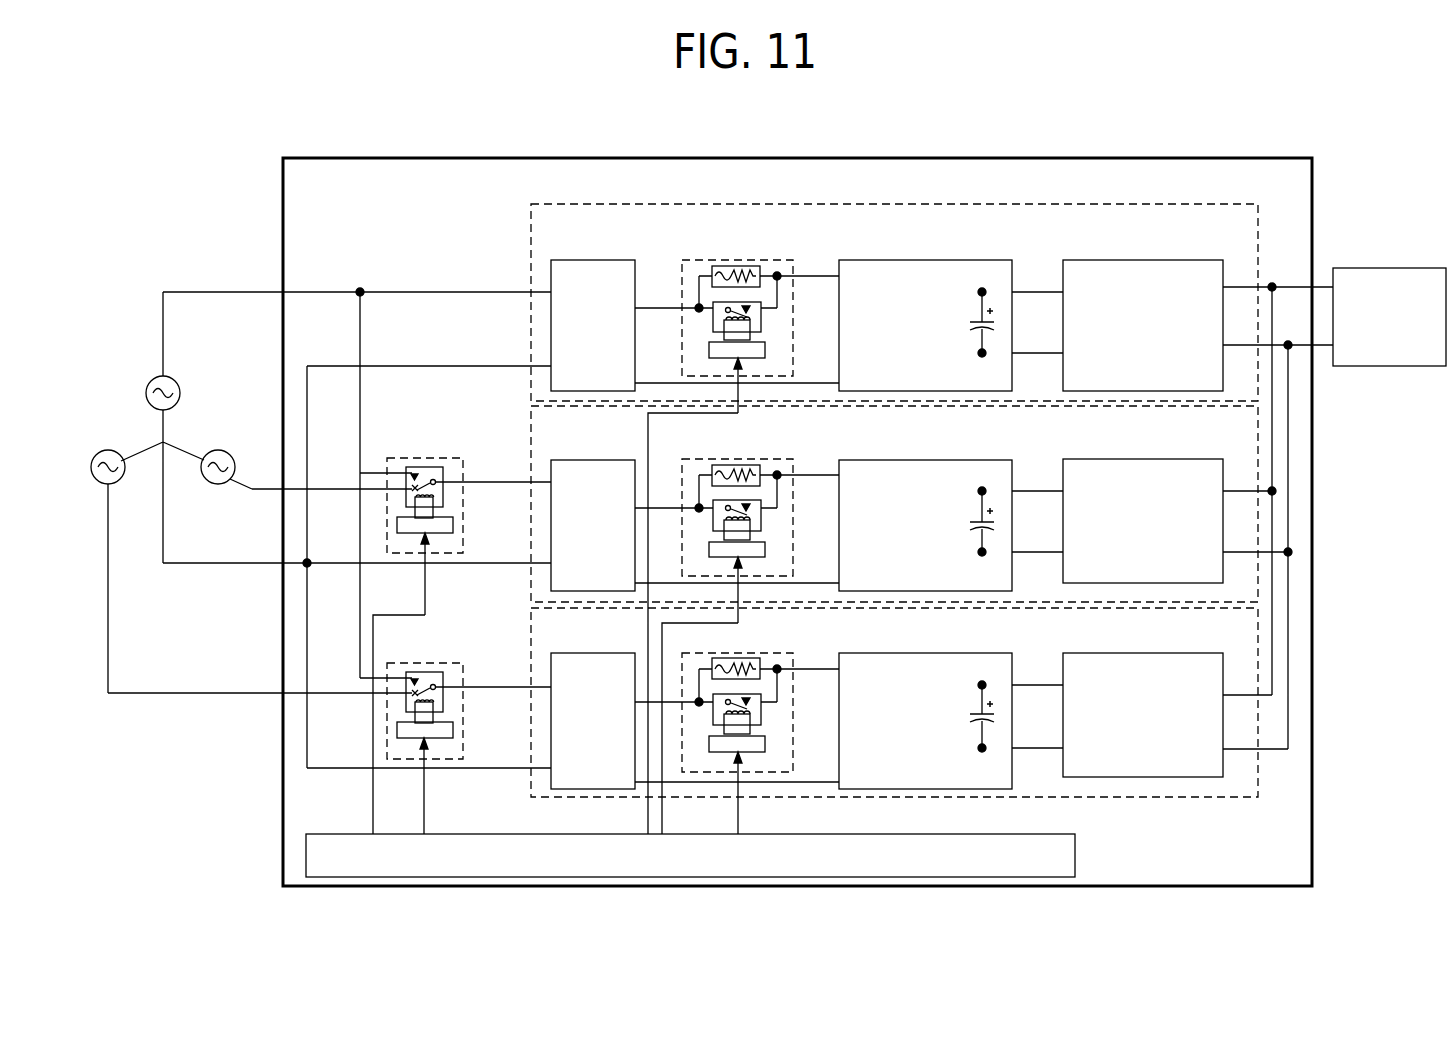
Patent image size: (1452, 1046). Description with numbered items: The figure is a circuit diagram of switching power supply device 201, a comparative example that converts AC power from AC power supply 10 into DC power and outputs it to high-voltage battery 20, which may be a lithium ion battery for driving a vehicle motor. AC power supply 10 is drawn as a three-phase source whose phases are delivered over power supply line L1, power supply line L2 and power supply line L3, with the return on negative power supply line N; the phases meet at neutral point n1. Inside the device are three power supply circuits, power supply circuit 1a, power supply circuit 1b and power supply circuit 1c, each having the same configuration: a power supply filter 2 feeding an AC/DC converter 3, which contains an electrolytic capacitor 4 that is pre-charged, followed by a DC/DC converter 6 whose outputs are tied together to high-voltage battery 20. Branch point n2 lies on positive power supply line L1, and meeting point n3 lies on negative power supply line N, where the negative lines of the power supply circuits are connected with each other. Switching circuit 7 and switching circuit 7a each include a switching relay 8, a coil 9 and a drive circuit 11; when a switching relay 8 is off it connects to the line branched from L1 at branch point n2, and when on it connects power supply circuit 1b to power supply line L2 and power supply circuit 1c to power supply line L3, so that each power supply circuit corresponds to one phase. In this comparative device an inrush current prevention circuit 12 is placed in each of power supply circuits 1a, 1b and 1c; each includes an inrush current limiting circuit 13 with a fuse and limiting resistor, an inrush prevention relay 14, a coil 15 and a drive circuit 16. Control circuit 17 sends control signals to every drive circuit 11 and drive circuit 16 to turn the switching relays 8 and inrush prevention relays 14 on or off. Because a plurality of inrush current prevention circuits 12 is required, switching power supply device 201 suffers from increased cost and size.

The switching power supply device 201 is at (410, 158).
The AC power supply 10 is at (208, 401).
The neutral point n1 is at (161, 442).
The branch point n2 is at (360, 291).
The meeting point n3 is at (308, 562).
The power supply line L1 is at (357, 278).
The power supply line L2 is at (332, 474).
The power supply line L3 is at (260, 679).
The negative power supply line N is at (357, 549).
The power supply circuit 1a is at (531, 235).
The power supply circuit 1b is at (531, 430).
The power supply circuit 1c is at (531, 622).
The power supply filter 2 is at (591, 260).
The switching circuit 7 is at (403, 458).
The switching circuit 7a is at (448, 665).
The switching relay 8 is at (425, 480).
The coil 9 is at (434, 505).
The drive circuit 11 is at (453, 525).
The inrush current prevention circuit 12 is at (700, 260).
The inrush current limiting circuit 13 is at (748, 266).
The inrush prevention relay 14 is at (727, 316).
The coil 15 is at (752, 327).
The drive circuit 16 is at (765, 349).
The AC/DC converter 3 is at (910, 260).
The electrolytic capacitor 4 is at (975, 322).
The DC/DC converter 6 is at (1135, 260).
The high-voltage battery 20 is at (1370, 268).
The control circuit 17 is at (1078, 850).